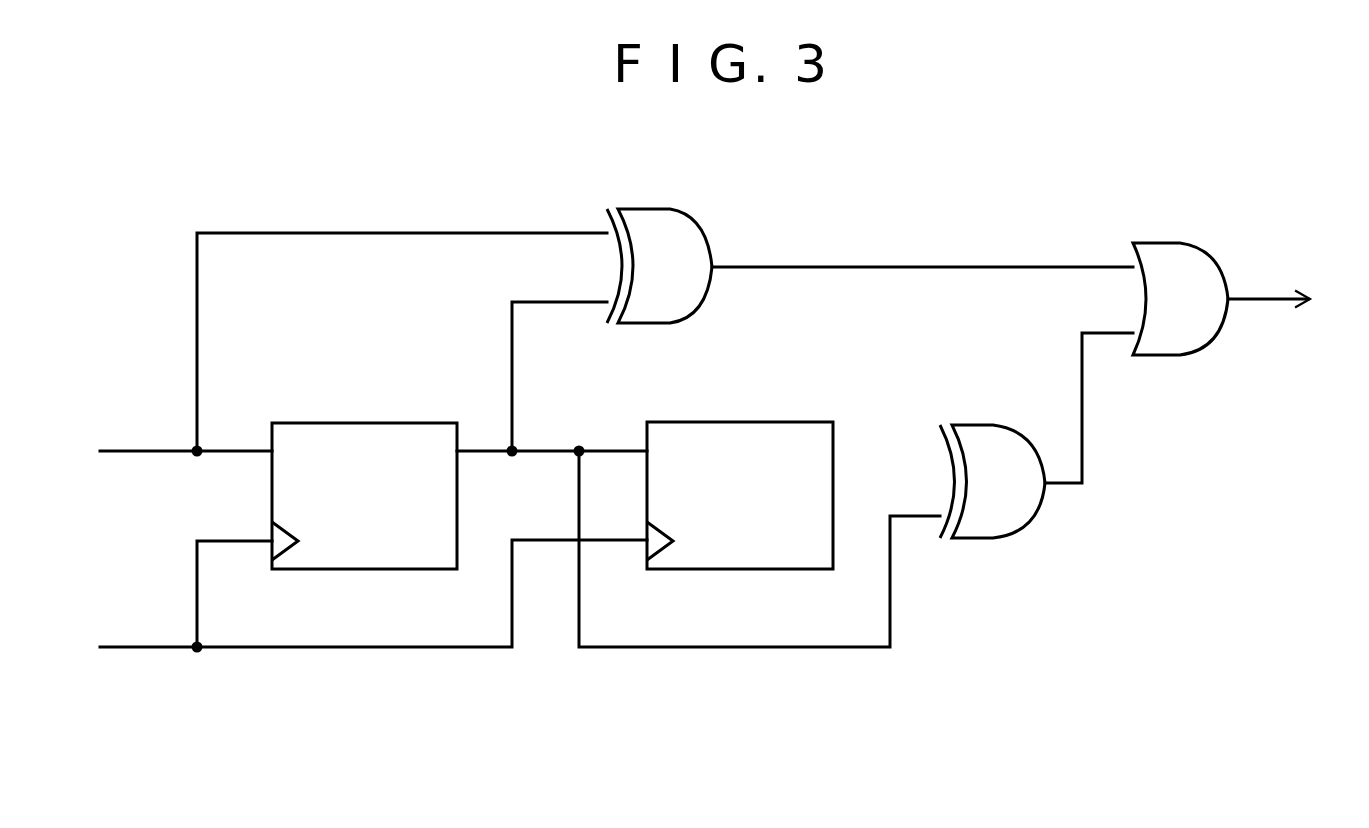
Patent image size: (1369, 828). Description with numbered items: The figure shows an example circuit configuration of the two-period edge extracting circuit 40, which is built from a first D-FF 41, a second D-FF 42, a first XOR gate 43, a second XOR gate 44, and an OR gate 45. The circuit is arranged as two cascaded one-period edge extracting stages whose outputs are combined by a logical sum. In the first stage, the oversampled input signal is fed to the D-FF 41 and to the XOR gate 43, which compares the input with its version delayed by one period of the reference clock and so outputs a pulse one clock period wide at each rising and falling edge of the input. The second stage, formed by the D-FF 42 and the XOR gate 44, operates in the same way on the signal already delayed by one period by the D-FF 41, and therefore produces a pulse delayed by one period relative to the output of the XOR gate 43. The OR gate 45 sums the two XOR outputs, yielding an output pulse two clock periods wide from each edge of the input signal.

The two-period edge extracting circuit 40 is at (925, 203).
The D-FF 41 is at (401, 423).
The D-FF 42 is at (779, 422).
The XOR gate 43 is at (650, 209).
The XOR gate 44 is at (996, 425).
The OR gate 45 is at (1175, 243).